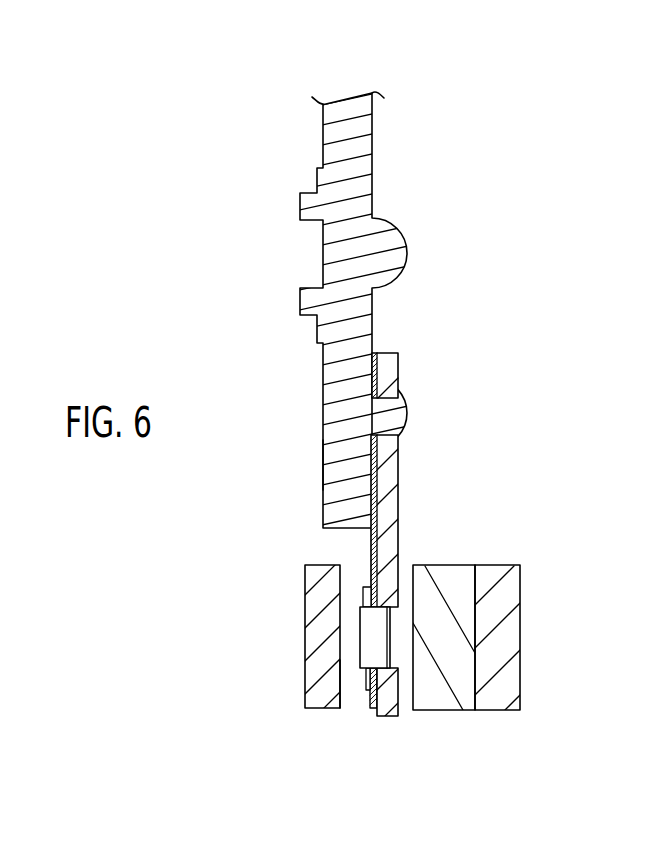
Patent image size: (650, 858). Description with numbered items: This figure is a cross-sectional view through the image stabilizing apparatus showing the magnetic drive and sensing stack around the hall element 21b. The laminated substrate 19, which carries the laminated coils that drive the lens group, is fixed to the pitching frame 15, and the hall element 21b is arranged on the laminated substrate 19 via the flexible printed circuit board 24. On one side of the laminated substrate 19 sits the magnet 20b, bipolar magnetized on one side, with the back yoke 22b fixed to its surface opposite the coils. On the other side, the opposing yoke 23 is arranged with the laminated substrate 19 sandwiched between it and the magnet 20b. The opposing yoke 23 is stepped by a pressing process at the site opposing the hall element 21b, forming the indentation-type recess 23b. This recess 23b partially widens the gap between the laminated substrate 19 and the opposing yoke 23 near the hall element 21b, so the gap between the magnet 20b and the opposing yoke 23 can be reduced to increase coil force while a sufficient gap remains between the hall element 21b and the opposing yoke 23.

The pitching frame 15 is at (386, 257).
The laminated substrate 19 is at (390, 474).
The magnet 20b is at (447, 583).
The hall element 21b is at (373, 633).
The back yoke 22b is at (500, 582).
The opposing yoke 23 is at (322, 687).
The indentation-type recess 23b is at (342, 677).
The flexible printed circuit board 24 is at (352, 465).